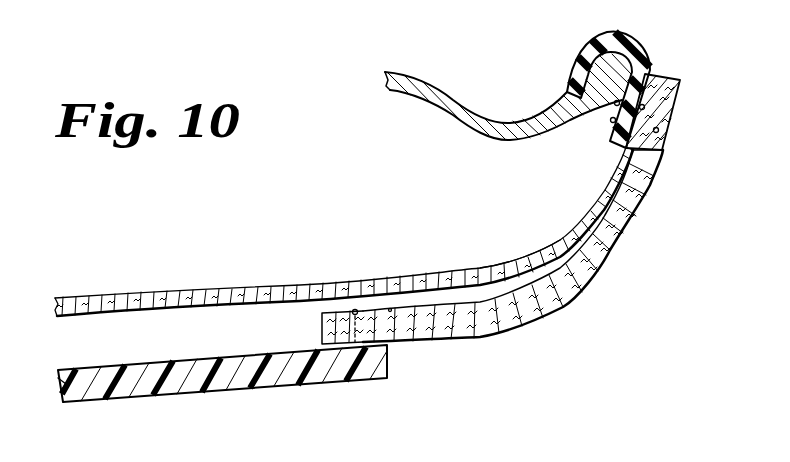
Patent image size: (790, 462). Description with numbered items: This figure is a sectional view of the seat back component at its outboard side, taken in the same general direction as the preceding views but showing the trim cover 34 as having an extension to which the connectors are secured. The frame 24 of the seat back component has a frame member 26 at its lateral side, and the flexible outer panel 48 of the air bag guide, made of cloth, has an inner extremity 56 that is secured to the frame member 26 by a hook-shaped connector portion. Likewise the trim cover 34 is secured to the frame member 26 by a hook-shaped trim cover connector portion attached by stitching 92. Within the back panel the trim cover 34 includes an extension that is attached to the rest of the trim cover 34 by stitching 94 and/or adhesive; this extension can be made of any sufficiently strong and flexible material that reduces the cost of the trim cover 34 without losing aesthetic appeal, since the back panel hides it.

The frame 24 is at (460, 165).
The frame member 26 is at (436, 75).
The trim cover 34 is at (578, 287).
The outer panel 48 is at (101, 297).
The inner extremity 56 is at (500, 262).
The stitching 92 is at (657, 104).
The stitching 94 is at (368, 328).